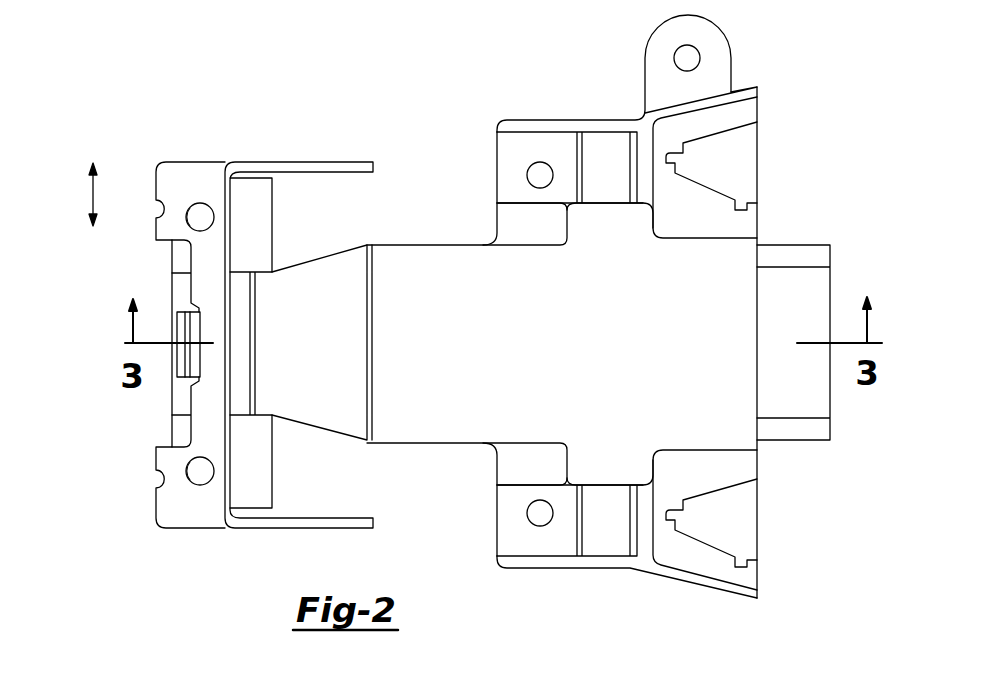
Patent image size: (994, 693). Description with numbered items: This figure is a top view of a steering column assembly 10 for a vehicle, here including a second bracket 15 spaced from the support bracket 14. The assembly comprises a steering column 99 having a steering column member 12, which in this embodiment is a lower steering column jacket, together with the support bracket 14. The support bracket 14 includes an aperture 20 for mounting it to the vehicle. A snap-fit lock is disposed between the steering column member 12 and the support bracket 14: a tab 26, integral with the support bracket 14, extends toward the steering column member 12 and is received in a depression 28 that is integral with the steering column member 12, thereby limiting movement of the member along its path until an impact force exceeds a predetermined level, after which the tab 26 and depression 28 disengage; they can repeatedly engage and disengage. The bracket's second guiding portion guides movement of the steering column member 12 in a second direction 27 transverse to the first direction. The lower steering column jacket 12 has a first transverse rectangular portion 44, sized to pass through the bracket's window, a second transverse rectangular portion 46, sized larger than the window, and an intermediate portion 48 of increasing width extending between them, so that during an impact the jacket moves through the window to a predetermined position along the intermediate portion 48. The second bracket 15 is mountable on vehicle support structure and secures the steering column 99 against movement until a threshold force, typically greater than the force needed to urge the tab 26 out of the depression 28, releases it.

The steering column assembly 10 is at (440, 142).
The steering column member 12 is at (451, 472).
The support bracket 14 is at (141, 136).
The second bracket 15 is at (572, 90).
The aperture 20 is at (198, 203).
The tab 26 is at (181, 328).
The second direction 27 is at (90, 196).
The depression 28 is at (182, 387).
The first transverse rectangular portion 44 is at (239, 290).
The second transverse rectangular portion 46 is at (428, 270).
The intermediate portion 48 is at (327, 388).
The steering column 99 is at (791, 68).